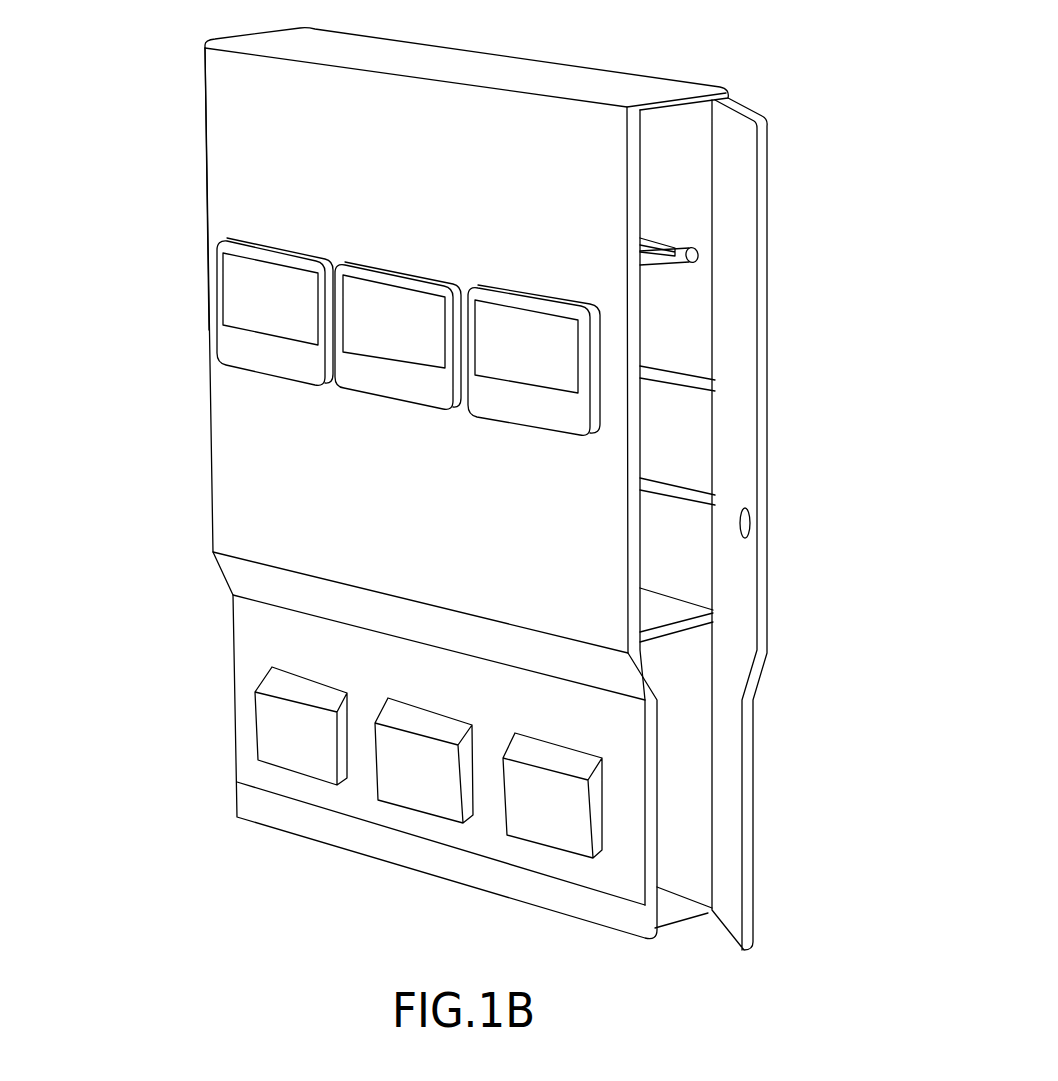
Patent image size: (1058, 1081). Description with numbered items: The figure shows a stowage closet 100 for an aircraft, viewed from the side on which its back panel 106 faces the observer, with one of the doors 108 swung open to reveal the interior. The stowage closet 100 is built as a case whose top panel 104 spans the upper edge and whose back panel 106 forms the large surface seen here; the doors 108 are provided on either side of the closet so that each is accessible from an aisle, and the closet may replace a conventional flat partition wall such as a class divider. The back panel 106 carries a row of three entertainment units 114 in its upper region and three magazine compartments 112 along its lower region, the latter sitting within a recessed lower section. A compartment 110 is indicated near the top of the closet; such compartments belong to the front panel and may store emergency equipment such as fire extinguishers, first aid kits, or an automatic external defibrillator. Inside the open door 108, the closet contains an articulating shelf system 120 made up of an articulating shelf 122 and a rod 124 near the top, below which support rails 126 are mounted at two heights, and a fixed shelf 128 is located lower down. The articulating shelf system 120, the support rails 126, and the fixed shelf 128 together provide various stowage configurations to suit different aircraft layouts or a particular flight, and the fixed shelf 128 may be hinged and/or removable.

The stowage closet 100 is at (146, 170).
The top panel 104 is at (650, 90).
The back panel 106 is at (298, 472).
The doors 108 is at (747, 427).
The compartments 110 is at (312, 128).
The magazine compartments 112 is at (298, 722).
The entertainment units 114 is at (247, 290).
The articulating shelf system 120 is at (762, 213).
The articulating shelf 122 is at (650, 240).
The rod 124 is at (648, 267).
The support rails 126 is at (658, 375).
The fixed shelf 128 is at (685, 625).